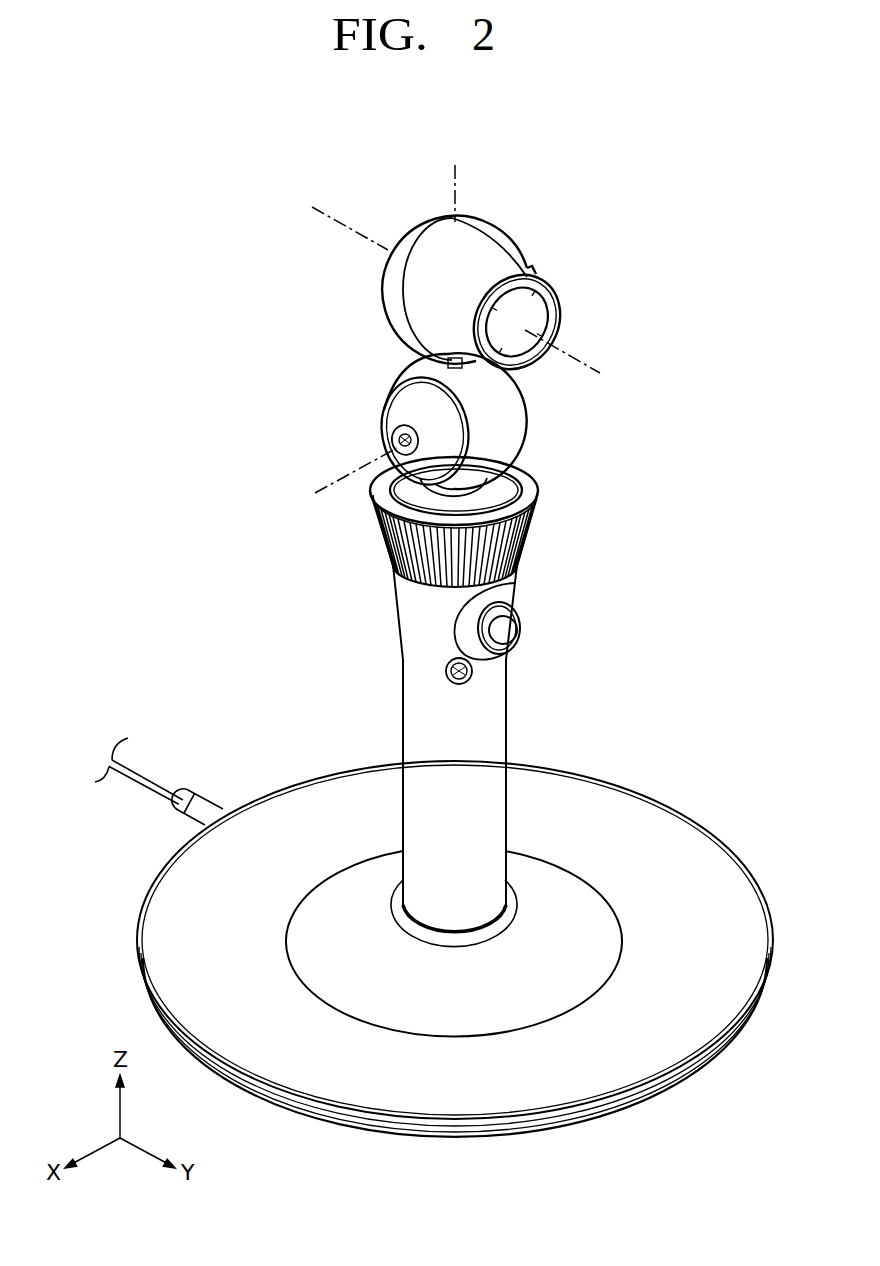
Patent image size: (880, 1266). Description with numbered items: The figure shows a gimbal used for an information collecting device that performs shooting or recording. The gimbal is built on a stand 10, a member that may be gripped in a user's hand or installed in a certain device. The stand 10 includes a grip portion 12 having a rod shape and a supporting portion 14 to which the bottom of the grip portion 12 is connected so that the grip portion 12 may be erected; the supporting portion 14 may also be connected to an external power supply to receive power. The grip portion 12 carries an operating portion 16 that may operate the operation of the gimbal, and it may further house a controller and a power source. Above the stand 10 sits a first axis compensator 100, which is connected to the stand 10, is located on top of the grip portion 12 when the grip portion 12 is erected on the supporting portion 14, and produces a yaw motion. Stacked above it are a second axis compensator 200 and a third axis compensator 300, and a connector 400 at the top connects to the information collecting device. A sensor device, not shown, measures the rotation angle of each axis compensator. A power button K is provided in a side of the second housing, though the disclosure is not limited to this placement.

The stand 10 is at (703, 679).
The grip portion 12 is at (510, 756).
The supporting portion 14 is at (668, 805).
The operating portion 16 is at (507, 630).
The first axis compensator 100 is at (522, 502).
The second axis compensator 200 is at (502, 424).
The third axis compensator 300 is at (523, 245).
The connector 400 is at (540, 312).
The power button K is at (400, 431).